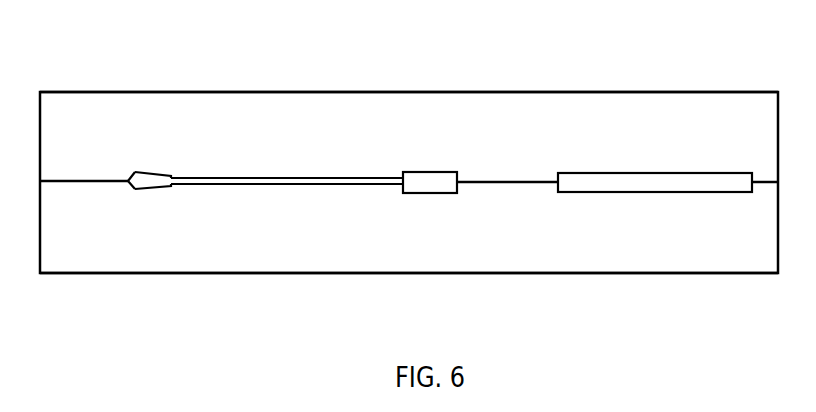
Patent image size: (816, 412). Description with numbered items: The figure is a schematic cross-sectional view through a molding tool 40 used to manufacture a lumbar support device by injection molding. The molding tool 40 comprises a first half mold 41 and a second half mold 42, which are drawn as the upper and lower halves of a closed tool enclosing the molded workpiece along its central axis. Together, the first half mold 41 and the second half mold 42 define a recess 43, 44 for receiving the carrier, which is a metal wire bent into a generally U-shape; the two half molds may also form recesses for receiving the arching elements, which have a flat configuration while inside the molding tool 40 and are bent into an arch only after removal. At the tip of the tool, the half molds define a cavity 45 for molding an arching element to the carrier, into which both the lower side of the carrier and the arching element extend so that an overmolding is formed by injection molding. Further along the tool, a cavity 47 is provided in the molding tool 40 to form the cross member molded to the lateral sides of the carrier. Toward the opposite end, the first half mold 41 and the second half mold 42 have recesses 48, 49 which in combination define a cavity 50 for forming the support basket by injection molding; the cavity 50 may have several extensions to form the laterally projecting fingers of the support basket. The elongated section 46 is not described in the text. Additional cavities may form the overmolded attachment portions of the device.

The molding tool 40 is at (186, 64).
The first half mold 41 is at (650, 92).
The second half mold 42 is at (654, 274).
The recess 43 is at (158, 173).
The recess 44 is at (165, 188).
The cavity 45 is at (131, 173).
The lead shaft 46 is at (222, 178).
The cavity 47 is at (439, 175).
The recess 48 is at (712, 174).
The recess 49 is at (712, 192).
The cavity 50 is at (660, 193).